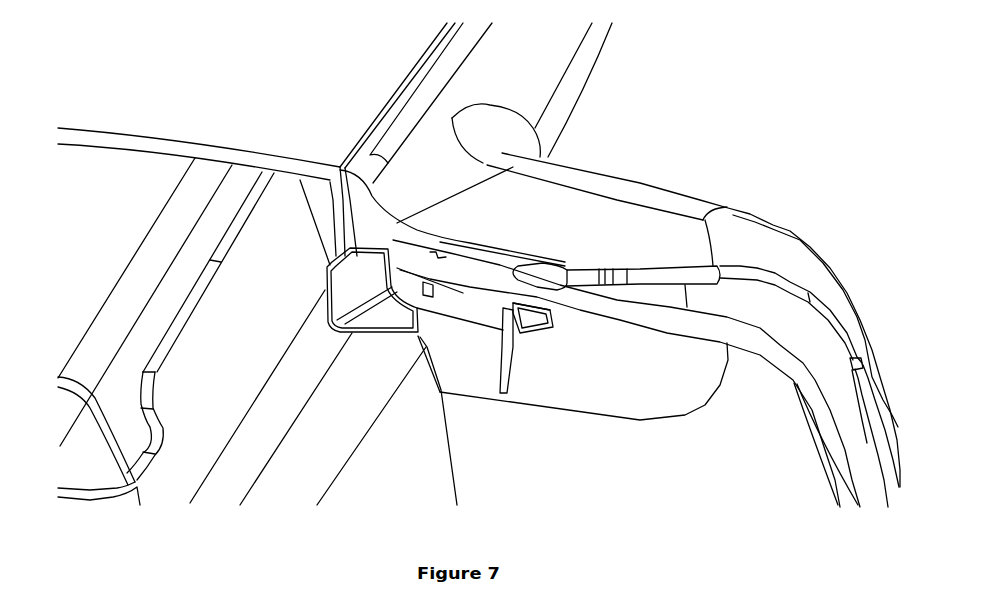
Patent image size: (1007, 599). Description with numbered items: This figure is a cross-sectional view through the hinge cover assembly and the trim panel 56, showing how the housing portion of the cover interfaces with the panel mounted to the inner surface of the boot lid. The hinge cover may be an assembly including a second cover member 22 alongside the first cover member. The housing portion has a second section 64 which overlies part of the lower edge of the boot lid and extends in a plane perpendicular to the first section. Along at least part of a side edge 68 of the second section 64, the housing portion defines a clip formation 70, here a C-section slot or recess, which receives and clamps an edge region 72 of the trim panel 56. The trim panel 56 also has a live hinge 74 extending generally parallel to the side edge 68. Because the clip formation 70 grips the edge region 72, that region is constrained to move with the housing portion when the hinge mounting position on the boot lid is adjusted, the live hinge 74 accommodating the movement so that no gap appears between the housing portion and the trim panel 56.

The second cover member 22 is at (291, 122).
The trim panel 56 is at (687, 327).
The second section 64 is at (535, 187).
The side edge 68 is at (702, 200).
The clip formation 70 is at (513, 333).
The edge region 72 is at (477, 275).
The live hinge 74 is at (550, 303).